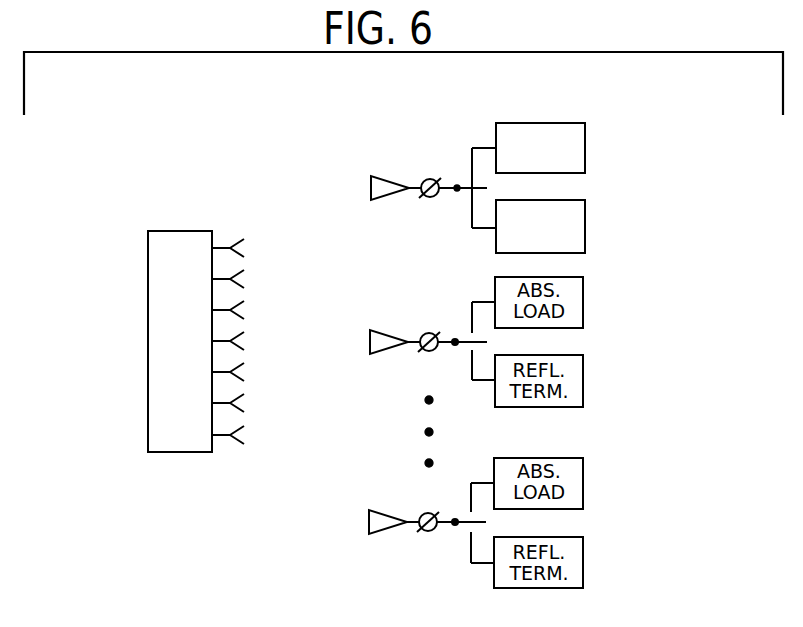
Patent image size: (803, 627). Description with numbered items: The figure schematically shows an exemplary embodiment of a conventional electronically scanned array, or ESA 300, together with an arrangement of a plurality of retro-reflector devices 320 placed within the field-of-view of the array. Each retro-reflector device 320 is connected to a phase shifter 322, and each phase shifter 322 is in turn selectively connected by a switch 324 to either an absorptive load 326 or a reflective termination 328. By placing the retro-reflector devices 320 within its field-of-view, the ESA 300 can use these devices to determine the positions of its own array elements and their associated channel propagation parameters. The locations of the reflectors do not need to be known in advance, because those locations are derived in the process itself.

The electronically scanned array 300 is at (176, 231).
The retro-reflector device 320 is at (390, 176).
The phase shifter 322 is at (430, 178).
The switch 324 is at (470, 182).
The absorptive load 326 is at (585, 148).
The reflective termination 328 is at (585, 228).